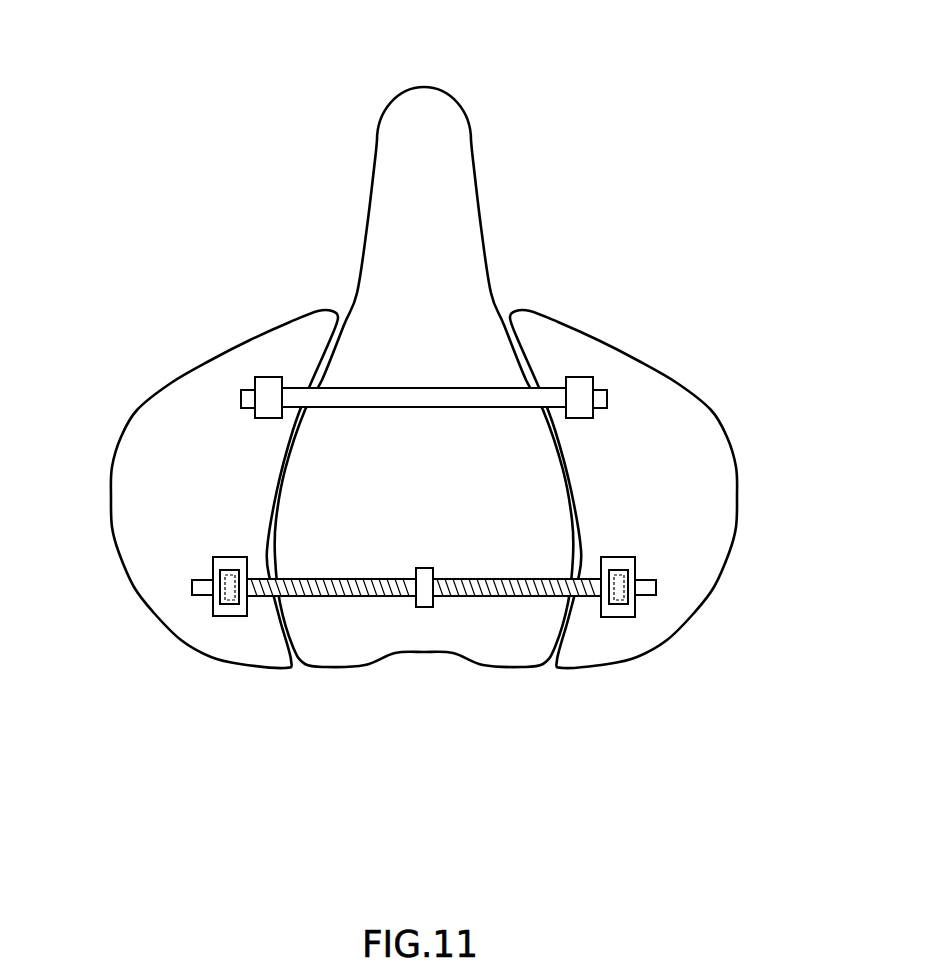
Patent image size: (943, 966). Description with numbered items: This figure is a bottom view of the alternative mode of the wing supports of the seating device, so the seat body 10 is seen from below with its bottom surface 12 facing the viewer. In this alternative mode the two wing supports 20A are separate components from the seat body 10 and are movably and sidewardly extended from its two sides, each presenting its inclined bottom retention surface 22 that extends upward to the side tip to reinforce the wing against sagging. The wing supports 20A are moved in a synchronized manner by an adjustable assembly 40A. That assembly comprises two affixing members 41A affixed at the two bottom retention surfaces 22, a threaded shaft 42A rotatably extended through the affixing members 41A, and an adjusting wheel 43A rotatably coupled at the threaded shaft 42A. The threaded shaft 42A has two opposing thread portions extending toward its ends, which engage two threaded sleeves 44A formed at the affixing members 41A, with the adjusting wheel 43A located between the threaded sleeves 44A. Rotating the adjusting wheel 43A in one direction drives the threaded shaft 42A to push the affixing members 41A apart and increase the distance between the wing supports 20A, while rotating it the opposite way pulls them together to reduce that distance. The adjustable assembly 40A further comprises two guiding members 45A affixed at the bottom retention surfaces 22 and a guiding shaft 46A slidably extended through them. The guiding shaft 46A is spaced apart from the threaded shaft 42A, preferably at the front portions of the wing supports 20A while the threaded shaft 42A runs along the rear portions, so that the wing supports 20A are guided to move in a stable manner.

The seat body 10 is at (424, 365).
The bottom surface 12 is at (441, 497).
The wing supports 20A is at (435, 489).
The bottom retention surface 22 is at (203, 496).
The adjustable assembly 40A is at (464, 688).
The affixing members 41A is at (218, 608).
The threaded shaft 42A is at (493, 597).
The adjusting wheel 43A is at (420, 600).
The threaded sleeves 44A is at (233, 595).
The guiding members 45A is at (268, 380).
The guiding shaft 46A is at (502, 390).